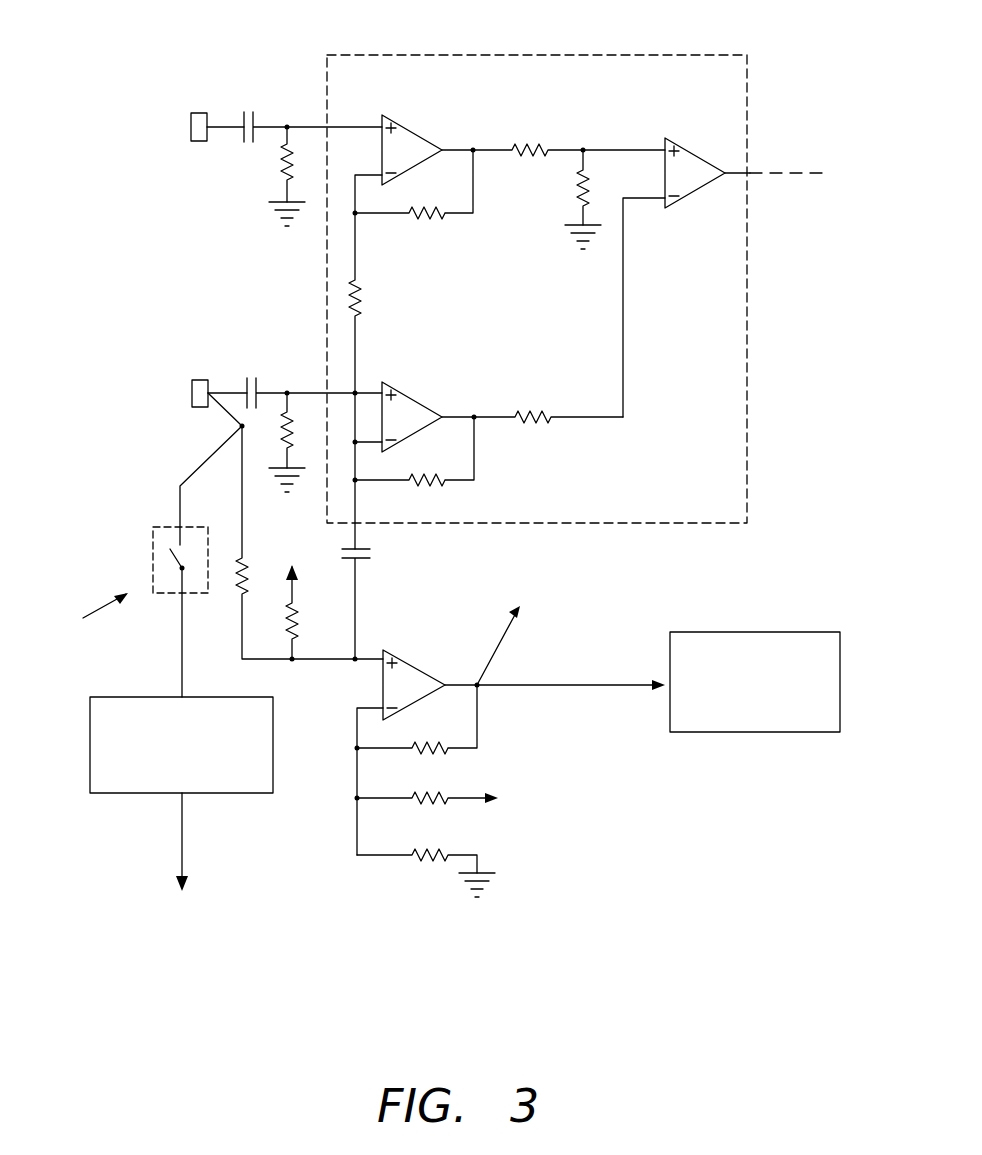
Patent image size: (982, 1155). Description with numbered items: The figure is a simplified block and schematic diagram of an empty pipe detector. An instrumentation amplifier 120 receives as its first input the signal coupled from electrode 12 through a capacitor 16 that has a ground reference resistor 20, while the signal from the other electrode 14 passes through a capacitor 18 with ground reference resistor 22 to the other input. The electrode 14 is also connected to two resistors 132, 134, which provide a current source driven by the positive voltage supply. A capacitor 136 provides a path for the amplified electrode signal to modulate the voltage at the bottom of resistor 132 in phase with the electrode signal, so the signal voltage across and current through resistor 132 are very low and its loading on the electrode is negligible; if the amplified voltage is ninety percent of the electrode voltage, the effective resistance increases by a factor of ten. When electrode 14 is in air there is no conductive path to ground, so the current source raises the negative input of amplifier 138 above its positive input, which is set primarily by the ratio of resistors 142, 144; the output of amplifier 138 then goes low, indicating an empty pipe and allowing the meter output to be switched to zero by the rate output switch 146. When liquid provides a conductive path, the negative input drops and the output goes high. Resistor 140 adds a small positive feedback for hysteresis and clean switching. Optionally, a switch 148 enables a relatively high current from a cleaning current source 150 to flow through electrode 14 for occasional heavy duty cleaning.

The electrode 12 is at (191, 119).
The electrode 14 is at (192, 394).
The capacitor 16 is at (250, 108).
The capacitor 18 is at (246, 376).
The ground reference resistor 20 is at (282, 163).
The ground reference resistor 22 is at (283, 423).
The instrumentation amplifier 120 is at (747, 330).
The resistor 132 is at (238, 562).
The resistor 134 is at (296, 620).
The capacitor 136 is at (372, 557).
The amplifier 138 is at (430, 693).
The resistor 140 is at (430, 751).
The resistor 142 is at (423, 800).
The resistor 144 is at (416, 858).
The rate output switch 146 is at (743, 733).
The switch 148 is at (153, 557).
The cleaning current source 150 is at (138, 795).